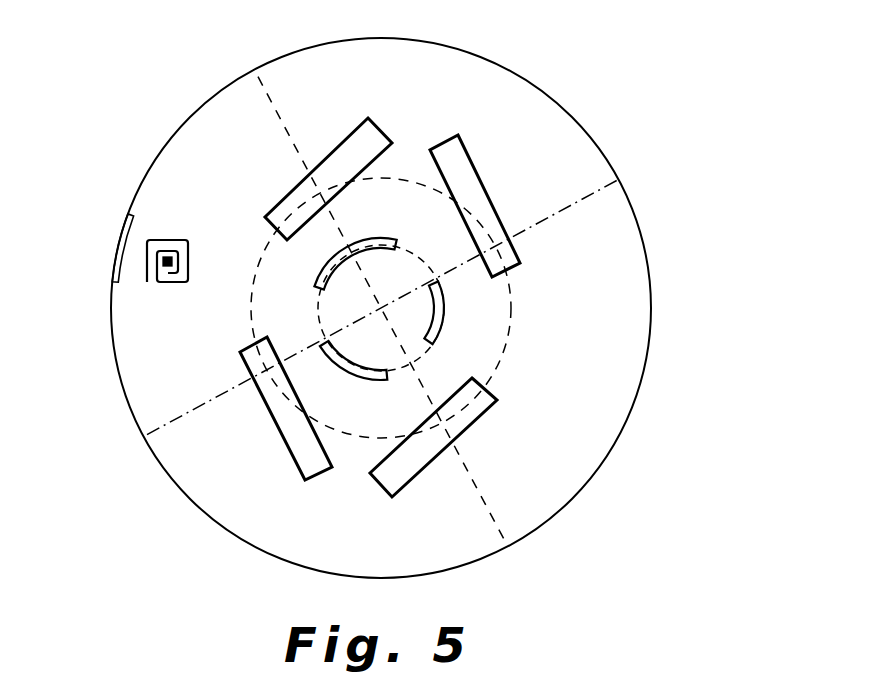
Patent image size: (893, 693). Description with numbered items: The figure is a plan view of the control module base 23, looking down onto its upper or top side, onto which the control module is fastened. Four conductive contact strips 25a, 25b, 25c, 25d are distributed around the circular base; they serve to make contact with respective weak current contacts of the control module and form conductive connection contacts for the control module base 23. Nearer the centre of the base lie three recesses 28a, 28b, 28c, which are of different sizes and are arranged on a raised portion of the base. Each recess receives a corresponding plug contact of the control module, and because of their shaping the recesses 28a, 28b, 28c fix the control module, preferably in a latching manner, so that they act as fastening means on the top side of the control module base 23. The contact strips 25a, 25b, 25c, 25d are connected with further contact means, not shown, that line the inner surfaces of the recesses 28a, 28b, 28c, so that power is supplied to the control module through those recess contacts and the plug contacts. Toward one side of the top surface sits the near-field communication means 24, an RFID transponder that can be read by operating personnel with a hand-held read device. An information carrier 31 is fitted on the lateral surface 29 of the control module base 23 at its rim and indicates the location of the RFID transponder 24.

The control module base 23 is at (653, 240).
The lateral surface 29 is at (155, 158).
The conductive contact strip 25a is at (284, 397).
The conductive contact strip 25b is at (422, 458).
The conductive contact strip 25c is at (478, 218).
The conductive contact strip 25d is at (381, 131).
The recess 28a is at (352, 371).
The recess 28b is at (447, 310).
The recess 28c is at (350, 256).
The near-field communication means 24 is at (170, 284).
The information carrier 31 is at (108, 278).